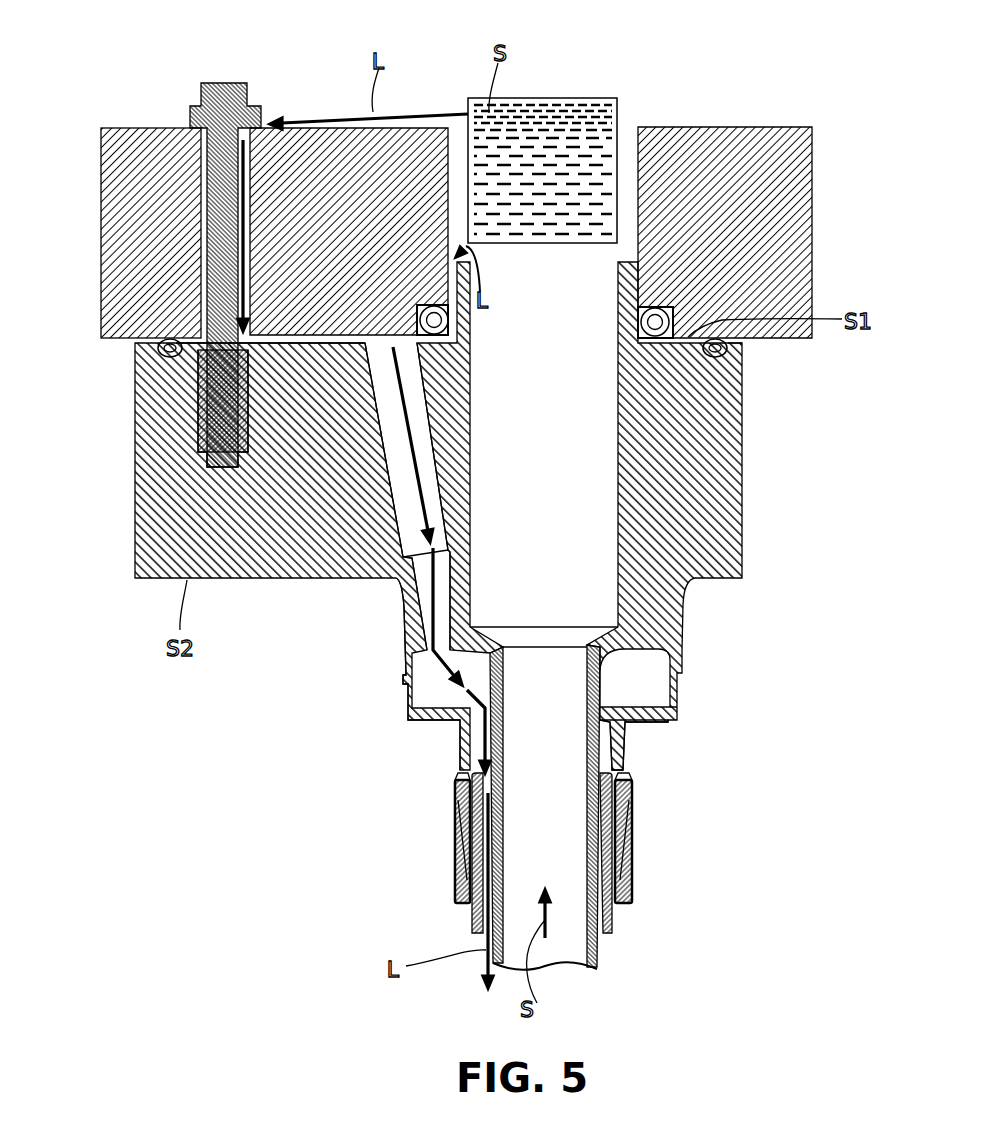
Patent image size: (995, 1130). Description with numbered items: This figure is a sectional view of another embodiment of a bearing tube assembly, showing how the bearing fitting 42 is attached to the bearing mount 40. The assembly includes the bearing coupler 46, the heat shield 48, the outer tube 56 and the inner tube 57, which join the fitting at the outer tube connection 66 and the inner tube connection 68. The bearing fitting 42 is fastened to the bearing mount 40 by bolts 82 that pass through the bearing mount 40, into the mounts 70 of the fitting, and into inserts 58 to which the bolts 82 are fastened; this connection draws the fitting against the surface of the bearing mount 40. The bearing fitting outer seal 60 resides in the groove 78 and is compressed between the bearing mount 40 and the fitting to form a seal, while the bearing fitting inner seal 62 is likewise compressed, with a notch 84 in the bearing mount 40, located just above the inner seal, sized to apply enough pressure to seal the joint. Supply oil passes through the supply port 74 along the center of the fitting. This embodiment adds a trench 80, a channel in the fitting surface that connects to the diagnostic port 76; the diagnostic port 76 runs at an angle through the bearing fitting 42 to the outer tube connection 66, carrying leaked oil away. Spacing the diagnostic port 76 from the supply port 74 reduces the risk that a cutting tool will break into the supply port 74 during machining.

The bearing mount 40 is at (133, 160).
The bearing fitting 42 is at (146, 608).
The bearing coupler 46 is at (670, 717).
The heat shield 48 is at (633, 893).
The outer tube 56 is at (613, 927).
The inner tube 57 is at (594, 960).
The insert 58 is at (200, 415).
The bearing fitting outer seal 60 is at (158, 350).
The bearing fitting inner seal 62 is at (425, 306).
The outer tube connection 66 is at (680, 677).
The inner tube connection 68 is at (630, 773).
The mount 70 is at (200, 353).
The supply port 74 is at (580, 556).
The diagnostic port 76 is at (397, 545).
The groove 78 is at (206, 345).
The trench 80 is at (407, 368).
The bolt 82 is at (199, 100).
The notch 84 is at (430, 306).